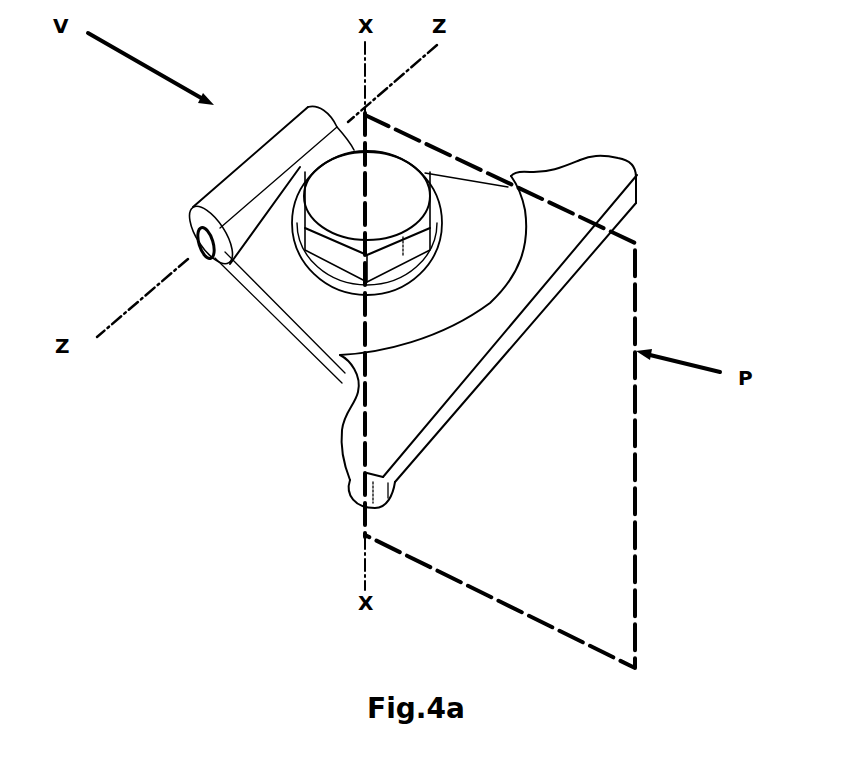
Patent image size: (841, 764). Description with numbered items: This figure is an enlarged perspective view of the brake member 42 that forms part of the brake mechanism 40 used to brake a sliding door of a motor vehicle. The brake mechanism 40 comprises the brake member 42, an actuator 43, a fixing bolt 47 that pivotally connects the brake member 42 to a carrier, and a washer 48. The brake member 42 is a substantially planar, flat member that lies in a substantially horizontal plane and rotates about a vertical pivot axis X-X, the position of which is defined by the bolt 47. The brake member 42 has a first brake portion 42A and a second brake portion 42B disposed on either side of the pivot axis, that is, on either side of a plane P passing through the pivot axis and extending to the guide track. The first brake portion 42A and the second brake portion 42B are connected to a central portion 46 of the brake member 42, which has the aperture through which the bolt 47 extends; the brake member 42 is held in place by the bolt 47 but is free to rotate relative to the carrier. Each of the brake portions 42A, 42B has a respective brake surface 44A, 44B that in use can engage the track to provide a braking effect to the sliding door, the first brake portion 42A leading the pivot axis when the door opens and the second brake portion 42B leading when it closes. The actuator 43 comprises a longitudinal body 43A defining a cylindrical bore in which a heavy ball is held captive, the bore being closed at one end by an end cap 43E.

The brake mechanism 40 is at (176, 179).
The brake member 42 is at (484, 241).
The first brake portion 42A is at (380, 438).
The second brake portion 42B is at (585, 197).
The actuator 43 is at (244, 184).
The longitudinal body 43A is at (200, 192).
The end cap 43E is at (197, 241).
The brake surface 44A is at (395, 482).
The brake surface 44B is at (625, 205).
The central portion 46 is at (300, 323).
The fixing bolt 47 is at (397, 194).
The washer 48 is at (325, 284).